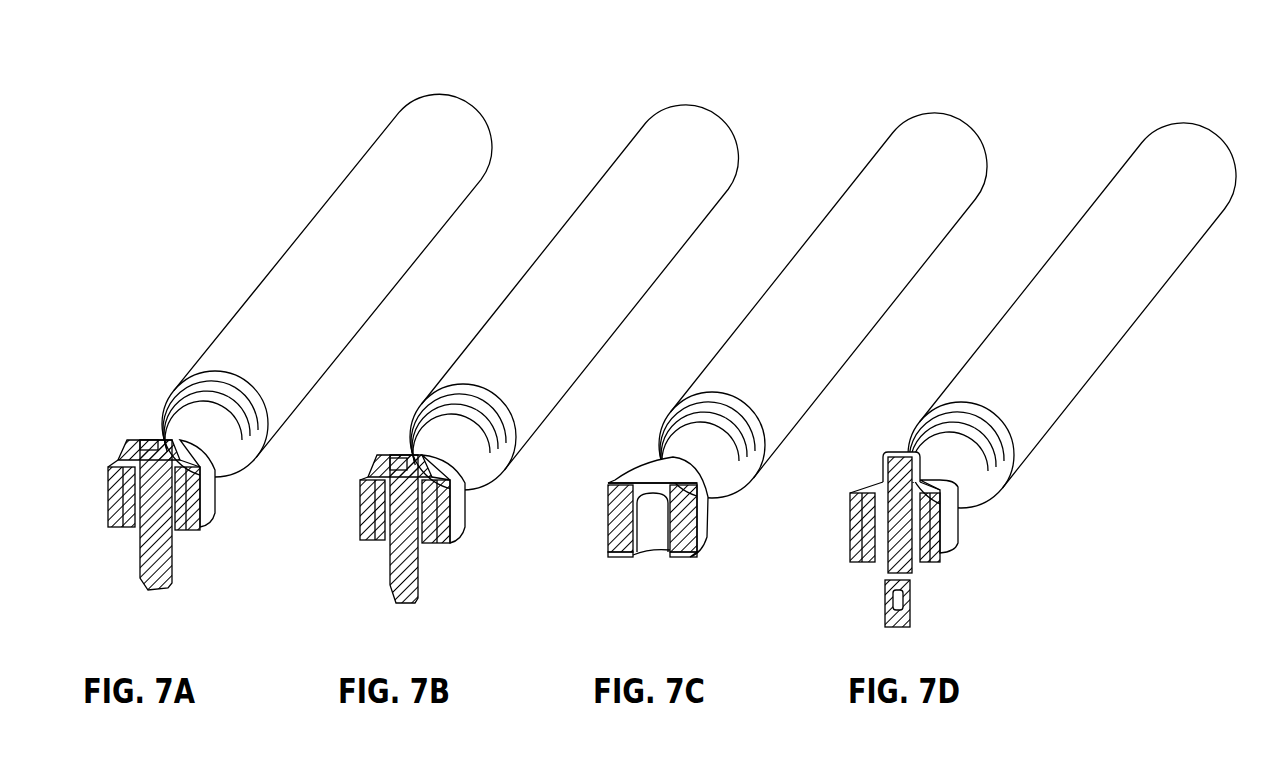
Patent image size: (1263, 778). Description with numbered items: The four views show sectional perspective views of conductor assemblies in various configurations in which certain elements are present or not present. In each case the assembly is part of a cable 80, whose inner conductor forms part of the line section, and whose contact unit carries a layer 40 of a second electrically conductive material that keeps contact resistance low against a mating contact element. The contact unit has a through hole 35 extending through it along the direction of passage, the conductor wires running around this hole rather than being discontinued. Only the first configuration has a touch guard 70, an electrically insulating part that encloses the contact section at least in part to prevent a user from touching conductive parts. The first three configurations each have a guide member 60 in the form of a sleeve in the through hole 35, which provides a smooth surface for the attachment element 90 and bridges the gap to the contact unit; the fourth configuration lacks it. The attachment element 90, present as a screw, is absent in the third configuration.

In FIG. 7A, the cable 80 is at (310, 245).
In FIG. 7B, the cable 80 is at (657, 155).
In FIG. 7C, the cable 80 is at (908, 165).
In FIG. 7D, the cable 80 is at (1180, 157).
In FIG. 7A, the touch guard 70 is at (207, 500).
In FIG. 7A, the attachment element 90 is at (128, 458).
In FIG. 7B, the attachment element 90 is at (402, 573).
In FIG. 7D, the attachment element 90 is at (885, 468).
In FIG. 7A, the guide member 60 is at (133, 527).
In FIG. 7B, the guide member 60 is at (368, 540).
In FIG. 7C, the guide member 60 is at (658, 533).
In FIG. 7A, the layer 40 is at (185, 530).
In FIG. 7B, the layer 40 is at (437, 543).
In FIG. 7C, the layer 40 is at (618, 557).
In FIG. 7D, the layer 40 is at (865, 562).
In FIG. 7C, the through hole 35 is at (633, 485).